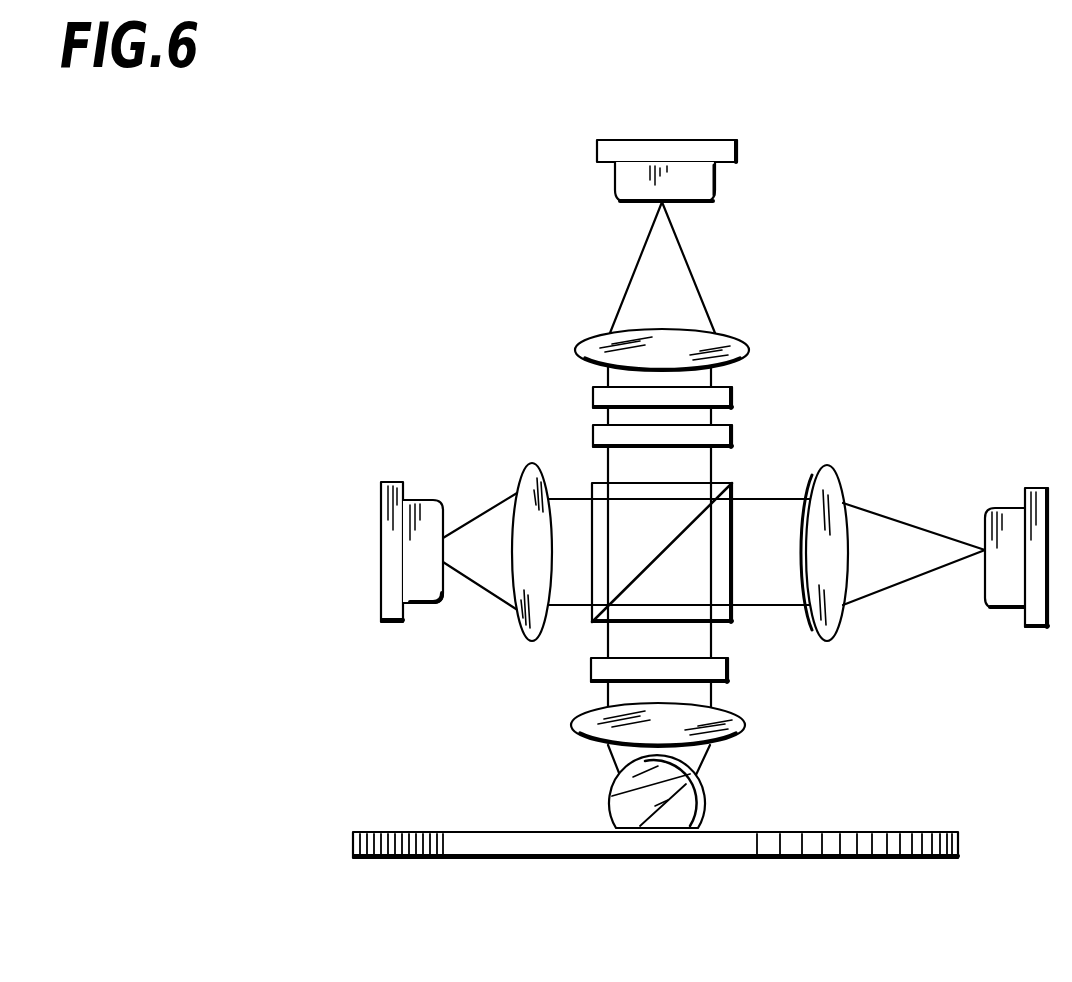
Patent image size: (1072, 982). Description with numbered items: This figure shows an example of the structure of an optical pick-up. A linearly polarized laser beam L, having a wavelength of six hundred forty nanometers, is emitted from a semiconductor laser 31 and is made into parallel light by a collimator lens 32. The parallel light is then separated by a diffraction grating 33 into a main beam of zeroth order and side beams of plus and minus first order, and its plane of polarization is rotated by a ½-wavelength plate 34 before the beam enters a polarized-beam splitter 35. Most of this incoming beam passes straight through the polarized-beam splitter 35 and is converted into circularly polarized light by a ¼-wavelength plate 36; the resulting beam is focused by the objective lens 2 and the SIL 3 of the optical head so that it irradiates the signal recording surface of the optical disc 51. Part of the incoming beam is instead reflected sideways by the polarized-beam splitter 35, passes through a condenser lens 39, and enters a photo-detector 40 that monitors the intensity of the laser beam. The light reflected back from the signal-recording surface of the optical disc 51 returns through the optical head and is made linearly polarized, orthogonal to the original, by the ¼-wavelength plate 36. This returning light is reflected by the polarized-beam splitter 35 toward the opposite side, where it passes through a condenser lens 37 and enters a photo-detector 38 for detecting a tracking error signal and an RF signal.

The semiconductor laser 31 is at (597, 152).
The laser beam L is at (693, 272).
The collimator lens 32 is at (598, 332).
The diffraction grating 33 is at (593, 393).
The ½-wavelength plate 34 is at (593, 435).
The polarized-beam splitter 35 is at (732, 483).
The condenser lens 39 is at (517, 485).
The photo-detector 40 is at (381, 590).
The condenser lens 37 is at (830, 473).
The photo-detector 38 is at (1027, 627).
The ¼-wavelength plate 36 is at (591, 672).
The objective lens 2 is at (738, 710).
The SIL 3 is at (707, 798).
The optical disc 51 is at (422, 858).